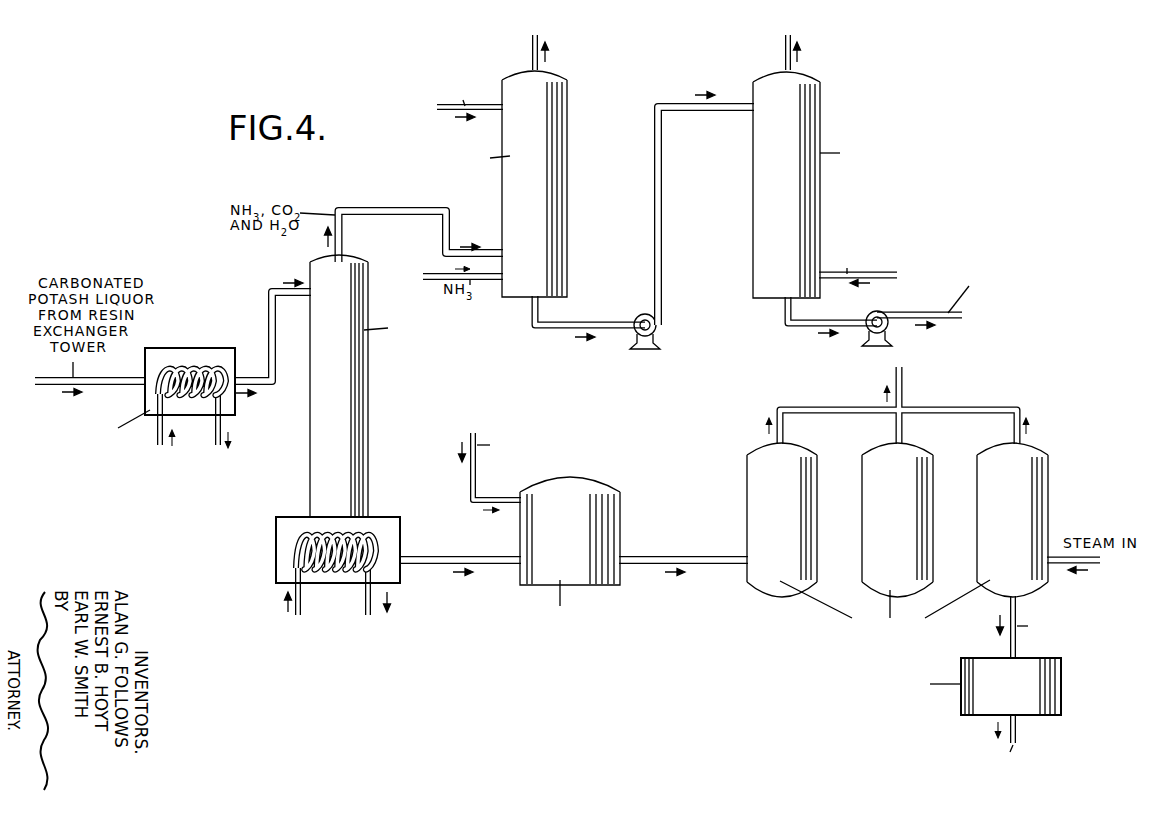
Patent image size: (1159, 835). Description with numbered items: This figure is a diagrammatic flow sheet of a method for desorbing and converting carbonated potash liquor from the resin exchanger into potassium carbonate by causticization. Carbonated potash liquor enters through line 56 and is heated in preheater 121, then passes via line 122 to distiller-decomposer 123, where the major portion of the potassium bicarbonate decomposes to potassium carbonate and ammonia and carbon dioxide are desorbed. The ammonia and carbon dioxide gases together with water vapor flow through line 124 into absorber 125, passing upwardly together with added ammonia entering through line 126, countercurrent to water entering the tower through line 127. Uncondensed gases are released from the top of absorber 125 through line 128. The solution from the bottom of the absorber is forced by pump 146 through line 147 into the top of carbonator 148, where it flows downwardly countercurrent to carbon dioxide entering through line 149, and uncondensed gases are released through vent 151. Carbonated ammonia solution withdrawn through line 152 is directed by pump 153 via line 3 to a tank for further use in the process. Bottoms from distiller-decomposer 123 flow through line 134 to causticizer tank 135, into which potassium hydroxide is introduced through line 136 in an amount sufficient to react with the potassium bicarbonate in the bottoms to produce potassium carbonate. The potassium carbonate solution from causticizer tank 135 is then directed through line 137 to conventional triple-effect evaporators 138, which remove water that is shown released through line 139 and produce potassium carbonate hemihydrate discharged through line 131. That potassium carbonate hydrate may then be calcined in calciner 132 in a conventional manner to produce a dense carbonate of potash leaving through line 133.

The line 56 is at (40, 383).
The preheater 121 is at (195, 356).
The line 122 is at (268, 317).
The distiller-decomposer 123 is at (368, 393).
The line 124 is at (397, 207).
The absorber 125 is at (567, 170).
The line 126 is at (423, 276).
The line 127 is at (437, 106).
The line 128 is at (531, 50).
The line 131 is at (1020, 608).
The calciner 132 is at (1062, 684).
The line 133 is at (1018, 731).
The line 134 is at (449, 556).
The causticizer tank 135 is at (596, 486).
The line 136 is at (470, 479).
The line 137 is at (685, 556).
The triple-effect evaporators 138 is at (875, 450).
The line 139 is at (896, 376).
The pump 146 is at (640, 315).
The line 147 is at (660, 190).
The carbonator 148 is at (821, 189).
The line 149 is at (886, 272).
The vent 151 is at (785, 46).
The line 152 is at (787, 328).
The pump 153 is at (877, 312).
The line 3 is at (962, 318).